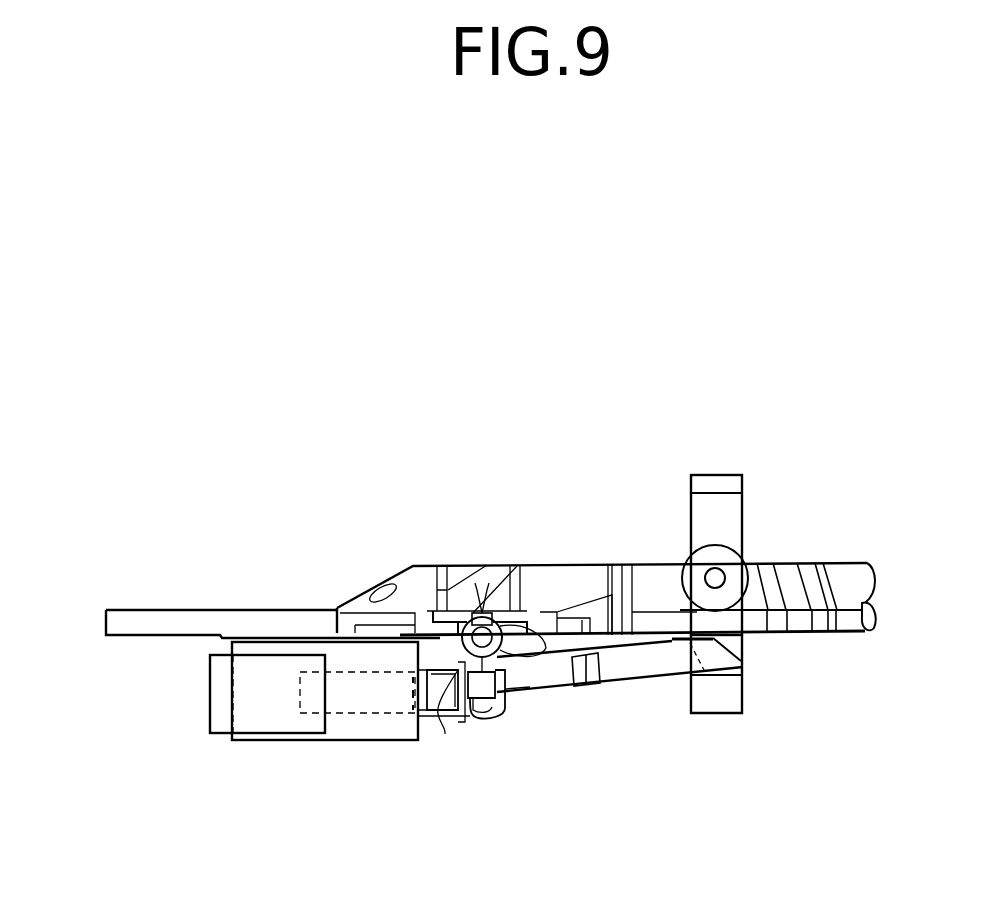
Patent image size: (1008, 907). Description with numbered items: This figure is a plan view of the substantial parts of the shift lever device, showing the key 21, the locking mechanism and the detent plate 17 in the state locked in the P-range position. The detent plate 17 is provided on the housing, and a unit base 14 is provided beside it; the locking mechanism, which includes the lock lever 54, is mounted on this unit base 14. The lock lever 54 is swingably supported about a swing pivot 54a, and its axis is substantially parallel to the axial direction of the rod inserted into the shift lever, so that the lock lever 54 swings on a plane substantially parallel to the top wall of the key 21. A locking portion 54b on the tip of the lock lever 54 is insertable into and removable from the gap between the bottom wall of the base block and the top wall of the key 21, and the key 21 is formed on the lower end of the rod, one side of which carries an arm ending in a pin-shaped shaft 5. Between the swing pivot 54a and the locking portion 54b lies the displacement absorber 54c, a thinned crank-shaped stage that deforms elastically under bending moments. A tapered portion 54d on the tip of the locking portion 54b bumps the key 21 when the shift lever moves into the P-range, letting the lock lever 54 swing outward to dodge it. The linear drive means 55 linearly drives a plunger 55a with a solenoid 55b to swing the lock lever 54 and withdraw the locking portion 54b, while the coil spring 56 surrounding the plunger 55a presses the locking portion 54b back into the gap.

The unit base 14 is at (163, 608).
The detent plate 17 is at (567, 563).
The key 21 is at (743, 507).
The pin-shaped shaft 5 is at (745, 697).
The lock lever 54 is at (645, 679).
The swing pivot 54a is at (545, 615).
The locking portion 54b is at (706, 666).
The displacement absorber 54c is at (587, 686).
The tapered portion 54d is at (745, 646).
The linear drive means 55 is at (205, 701).
The plunger 55a is at (483, 720).
The solenoid 55b is at (288, 742).
The coil spring 56 is at (440, 740).